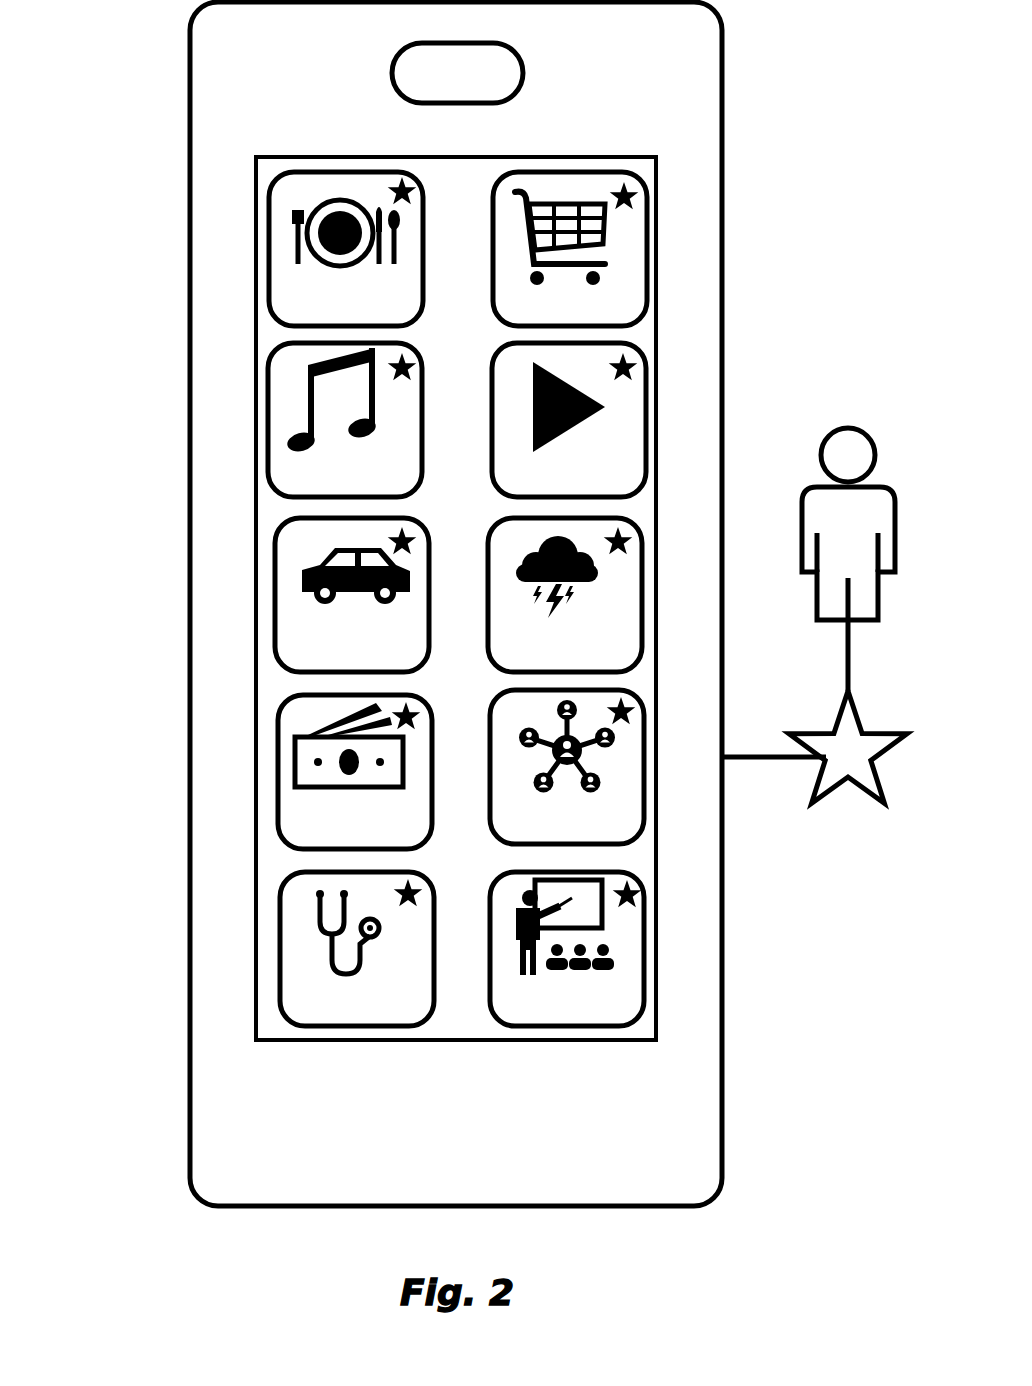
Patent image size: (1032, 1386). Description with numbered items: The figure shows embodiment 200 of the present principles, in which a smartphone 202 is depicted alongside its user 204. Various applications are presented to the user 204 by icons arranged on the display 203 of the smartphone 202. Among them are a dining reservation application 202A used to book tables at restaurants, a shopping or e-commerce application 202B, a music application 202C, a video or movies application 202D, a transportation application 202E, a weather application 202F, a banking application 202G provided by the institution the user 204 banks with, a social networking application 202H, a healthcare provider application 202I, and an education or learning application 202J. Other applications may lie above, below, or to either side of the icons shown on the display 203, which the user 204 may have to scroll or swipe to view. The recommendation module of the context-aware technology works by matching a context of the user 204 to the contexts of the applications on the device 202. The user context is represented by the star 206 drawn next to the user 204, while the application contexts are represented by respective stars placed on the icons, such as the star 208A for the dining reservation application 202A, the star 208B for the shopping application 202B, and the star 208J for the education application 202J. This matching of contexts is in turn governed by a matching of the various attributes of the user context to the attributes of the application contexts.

The embodiment 200 is at (124, 1172).
The smartphone 202 is at (456, 604).
The display 203 is at (456, 598).
The dining reservation application 202A is at (346, 249).
The shopping or e-commerce application 202B is at (570, 249).
The music application 202C is at (345, 420).
The video or movies application 202D is at (569, 420).
The transportation application 202E is at (352, 595).
The weather application 202F is at (565, 595).
The banking application 202G is at (355, 772).
The social networking application 202H is at (567, 767).
The healthcare provider application 202I is at (357, 949).
The education or learning application 202J is at (567, 949).
The star 208A is at (402, 180).
The star 208B is at (625, 188).
The star 208J is at (627, 882).
The user 204 is at (848, 524).
The star 206 is at (814, 711).